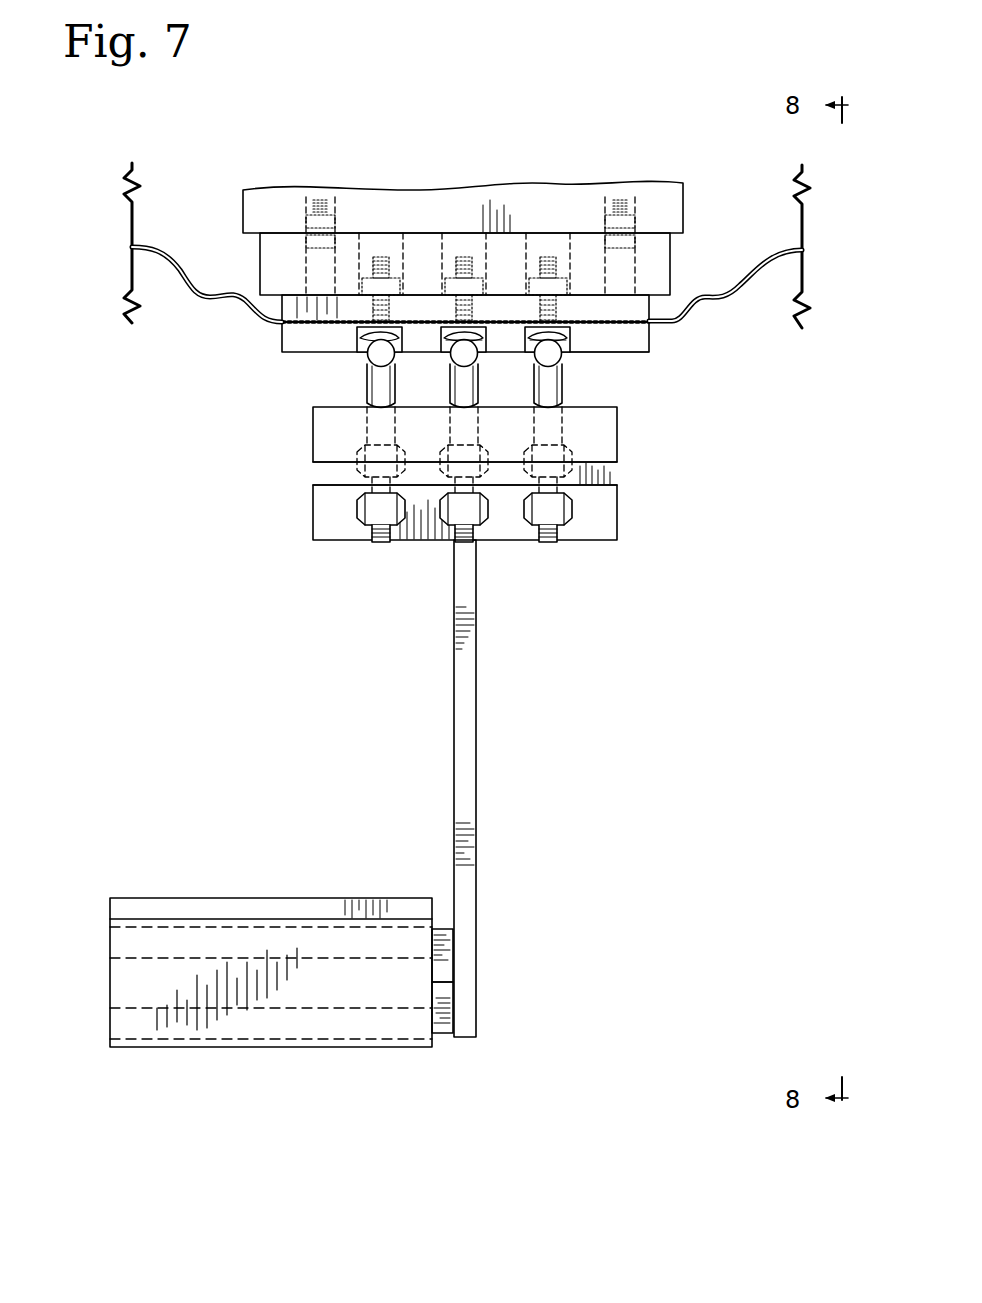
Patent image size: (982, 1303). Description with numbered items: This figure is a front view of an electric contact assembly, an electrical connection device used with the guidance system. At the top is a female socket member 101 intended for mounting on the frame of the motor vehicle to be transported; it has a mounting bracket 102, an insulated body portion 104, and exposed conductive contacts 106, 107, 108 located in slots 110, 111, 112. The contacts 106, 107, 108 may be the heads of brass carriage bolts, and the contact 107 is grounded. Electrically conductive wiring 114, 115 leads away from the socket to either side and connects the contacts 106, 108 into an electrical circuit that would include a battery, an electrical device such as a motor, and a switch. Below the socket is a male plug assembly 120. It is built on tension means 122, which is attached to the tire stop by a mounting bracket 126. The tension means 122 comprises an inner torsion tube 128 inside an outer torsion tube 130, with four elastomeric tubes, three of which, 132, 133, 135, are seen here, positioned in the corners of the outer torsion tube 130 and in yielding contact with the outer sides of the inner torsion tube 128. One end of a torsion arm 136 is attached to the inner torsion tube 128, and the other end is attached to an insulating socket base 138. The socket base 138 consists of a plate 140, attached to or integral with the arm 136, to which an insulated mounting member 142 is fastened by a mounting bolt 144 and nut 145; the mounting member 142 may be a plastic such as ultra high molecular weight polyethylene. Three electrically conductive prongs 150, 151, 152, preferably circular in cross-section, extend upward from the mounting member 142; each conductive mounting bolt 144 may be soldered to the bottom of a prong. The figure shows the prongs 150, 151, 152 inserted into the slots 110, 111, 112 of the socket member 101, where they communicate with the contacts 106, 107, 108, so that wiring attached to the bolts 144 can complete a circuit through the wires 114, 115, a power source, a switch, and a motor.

The female socket member 101 is at (157, 341).
The mounting bracket 102 is at (430, 205).
The insulated body portion 104 is at (280, 308).
The exposed conductive contact 106 is at (358, 328).
The exposed conductive contact 107 is at (468, 342).
The exposed conductive contact 108 is at (563, 352).
The slot 110 is at (396, 352).
The slot 111 is at (440, 327).
The slot 112 is at (565, 323).
The electrically conductive wiring 114 is at (763, 262).
The electrically conductive wiring 115 is at (172, 260).
The male plug assembly 120 is at (130, 617).
The tension means 122 is at (300, 1112).
The mounting bracket 126 is at (228, 898).
The inner torsion tube 128 is at (444, 1037).
The outer torsion tube 130 is at (325, 1048).
The elastomeric tube 132 is at (133, 1039).
The elastomeric tube 133 is at (221, 1027).
The elastomeric tube 135 is at (133, 958).
The torsion arm 136 is at (468, 758).
The insulating socket base 138 is at (232, 494).
The plate 140 is at (618, 510).
The insulated mounting member 142 is at (618, 437).
The mounting bolt 144 is at (550, 545).
The nut 145 is at (575, 510).
The electrically conductive prong 150 is at (365, 390).
The electrically conductive prong 151 is at (480, 400).
The electrically conductive prong 152 is at (572, 347).